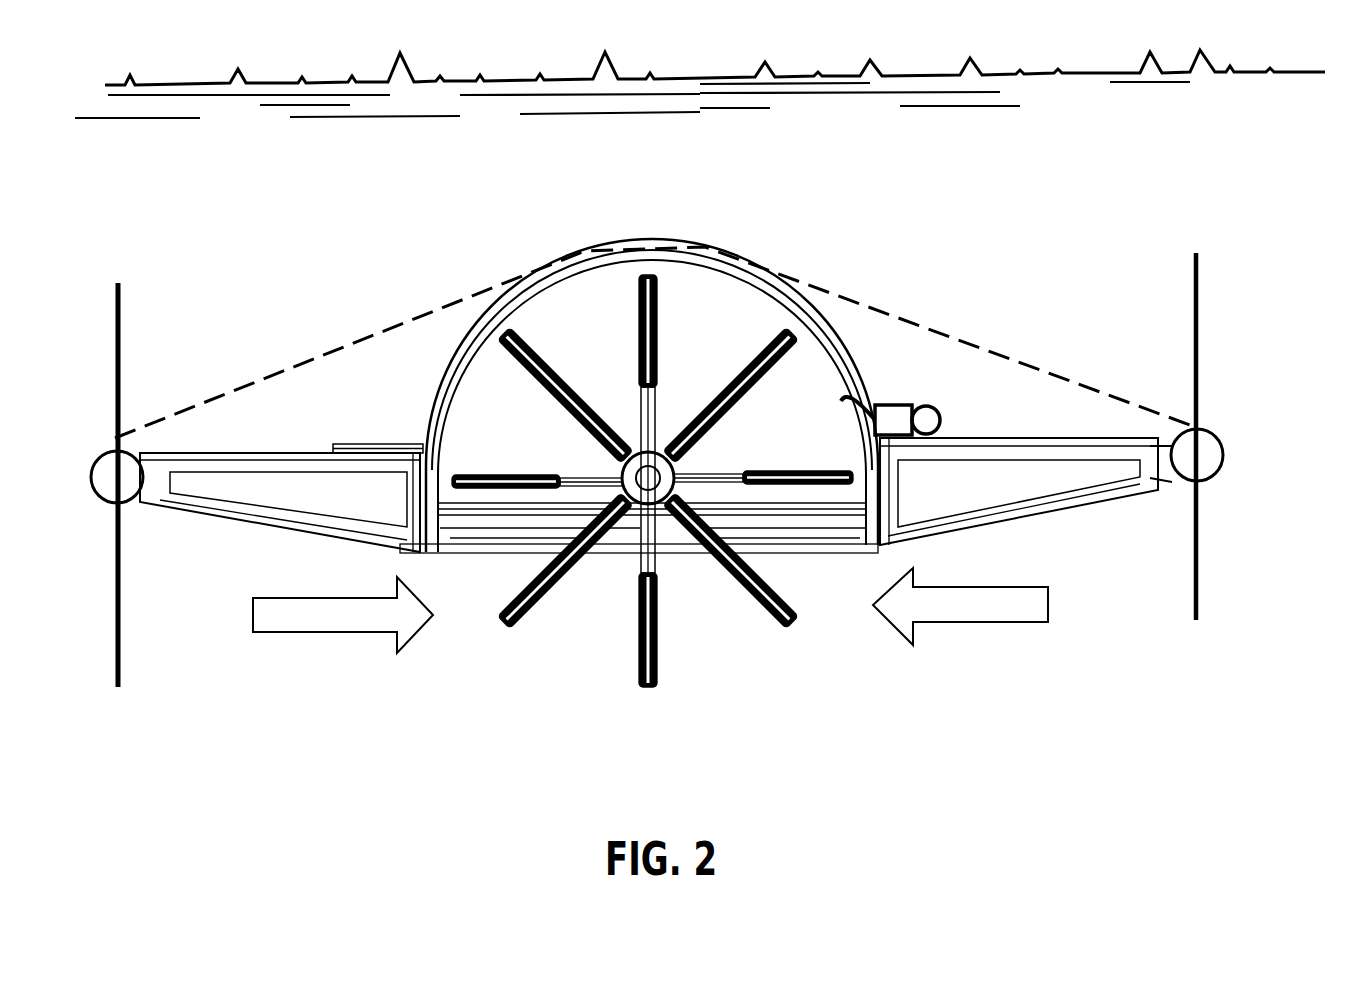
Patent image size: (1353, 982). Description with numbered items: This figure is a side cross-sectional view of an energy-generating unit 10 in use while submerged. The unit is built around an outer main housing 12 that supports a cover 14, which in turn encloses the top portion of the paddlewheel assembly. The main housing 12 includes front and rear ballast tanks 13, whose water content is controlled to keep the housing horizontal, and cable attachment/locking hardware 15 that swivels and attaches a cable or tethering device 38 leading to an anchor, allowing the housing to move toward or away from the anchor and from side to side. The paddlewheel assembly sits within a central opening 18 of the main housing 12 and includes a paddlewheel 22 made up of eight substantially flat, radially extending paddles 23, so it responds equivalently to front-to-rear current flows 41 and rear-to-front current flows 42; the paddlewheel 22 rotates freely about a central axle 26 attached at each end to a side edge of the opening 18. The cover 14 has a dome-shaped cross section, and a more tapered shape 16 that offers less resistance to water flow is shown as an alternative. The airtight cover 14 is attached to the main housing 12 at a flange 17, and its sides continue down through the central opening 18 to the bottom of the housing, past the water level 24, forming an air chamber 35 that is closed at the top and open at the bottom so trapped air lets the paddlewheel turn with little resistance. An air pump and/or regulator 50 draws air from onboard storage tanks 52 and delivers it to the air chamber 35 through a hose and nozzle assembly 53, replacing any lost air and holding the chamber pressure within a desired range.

The energy-generating unit 10 is at (1048, 260).
The outer main housing 12 is at (1224, 463).
The ballast tanks 13 is at (300, 487).
The cover 14 is at (850, 360).
The cable attachment/locking hardware 15 is at (118, 492).
The tapered shape 16 is at (322, 352).
The flange 17 is at (375, 446).
The central opening 18 is at (492, 548).
The paddlewheel 22 is at (640, 545).
The paddles 23 is at (537, 598).
The water level 24 is at (492, 503).
The central axle 26 is at (652, 468).
The air chamber 35 is at (735, 297).
The cable or tethering device 38 is at (118, 637).
The front-to-rear current flow 41 is at (340, 618).
The rear-to-front current flow 42 is at (978, 600).
The air pump and/or regulator 50 is at (894, 405).
The onboard storage tanks 52 is at (940, 418).
The hose and nozzle assembly 53 is at (843, 400).